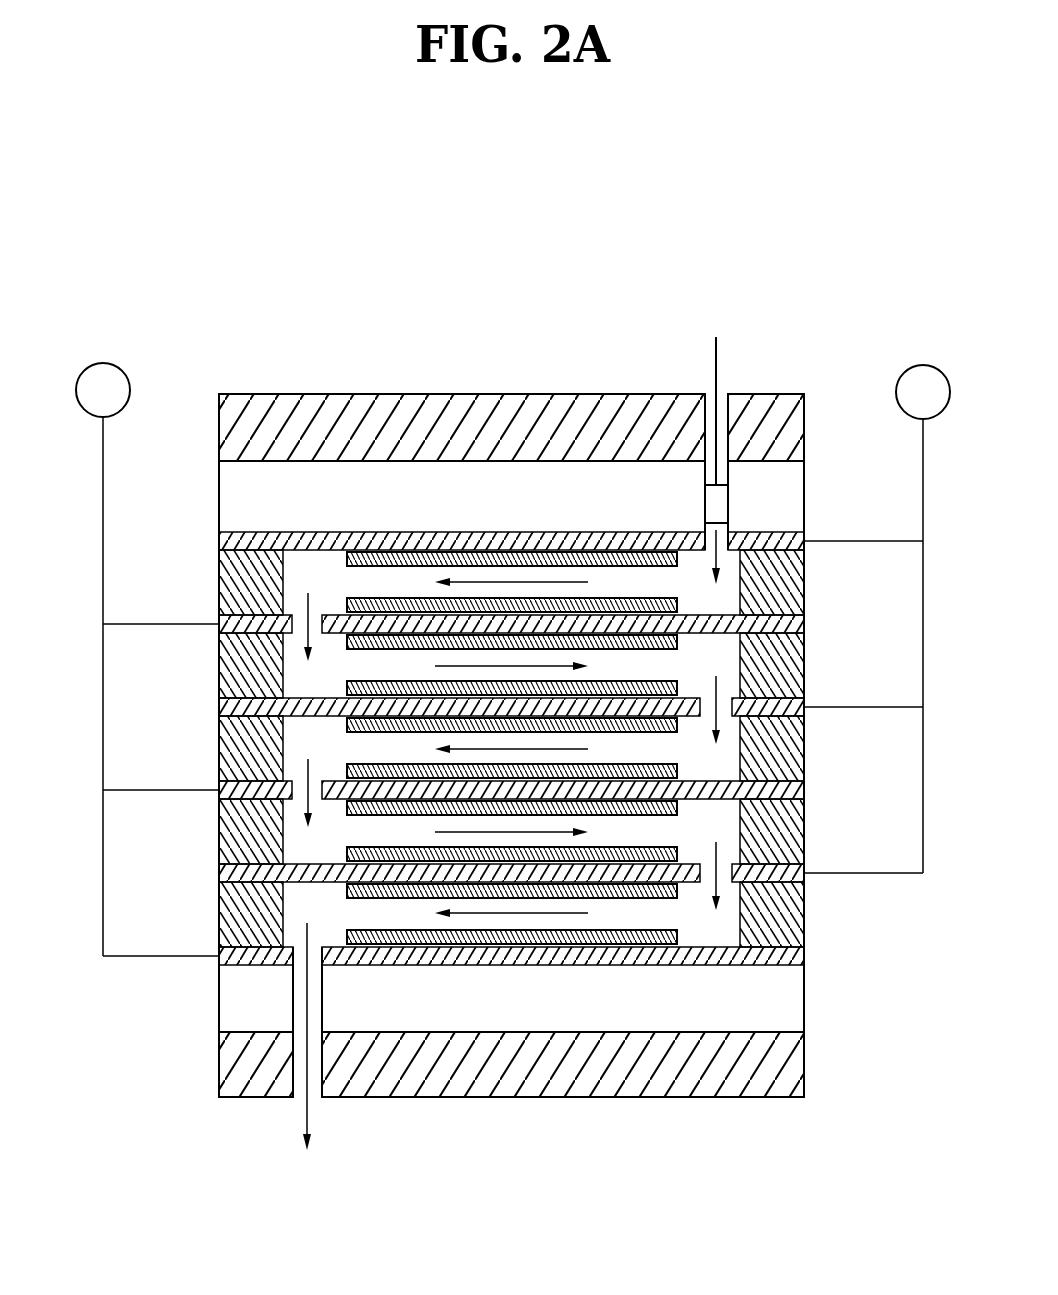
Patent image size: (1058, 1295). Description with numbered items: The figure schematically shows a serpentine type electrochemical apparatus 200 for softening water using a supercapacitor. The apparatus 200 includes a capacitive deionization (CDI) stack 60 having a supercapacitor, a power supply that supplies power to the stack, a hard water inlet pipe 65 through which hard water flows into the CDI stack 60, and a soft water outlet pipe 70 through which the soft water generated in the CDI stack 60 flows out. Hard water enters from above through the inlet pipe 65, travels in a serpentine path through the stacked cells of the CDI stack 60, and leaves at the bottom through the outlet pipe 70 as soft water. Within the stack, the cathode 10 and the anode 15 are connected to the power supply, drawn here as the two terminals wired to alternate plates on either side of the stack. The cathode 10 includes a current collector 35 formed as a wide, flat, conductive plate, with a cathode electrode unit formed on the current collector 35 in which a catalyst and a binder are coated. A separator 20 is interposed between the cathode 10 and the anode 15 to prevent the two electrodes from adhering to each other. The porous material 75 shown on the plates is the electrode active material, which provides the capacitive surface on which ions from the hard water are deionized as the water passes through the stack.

The electrochemical apparatus for softening water 200 is at (268, 304).
The cathode 10 is at (877, 600).
The anode 15 is at (147, 640).
The separator 20 is at (790, 918).
The current collector 35 is at (803, 965).
The capacitive deionization stack 60 is at (511, 410).
The hard water inlet pipe 65 is at (740, 428).
The soft water outlet pipe 70 is at (297, 1061).
The porous material 75 is at (657, 955).